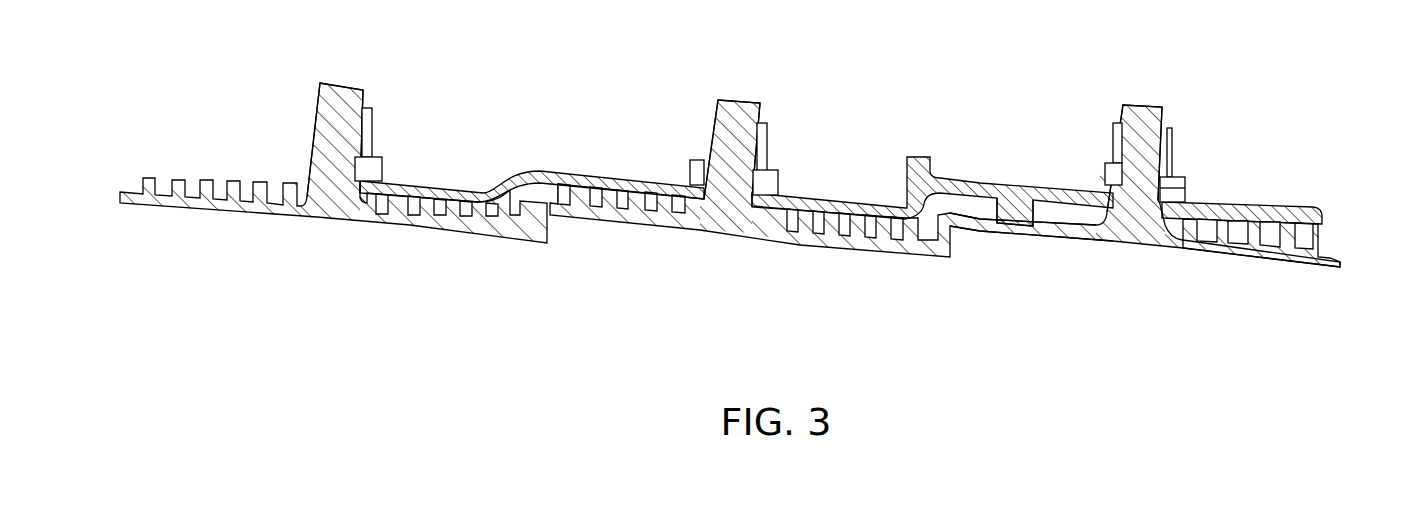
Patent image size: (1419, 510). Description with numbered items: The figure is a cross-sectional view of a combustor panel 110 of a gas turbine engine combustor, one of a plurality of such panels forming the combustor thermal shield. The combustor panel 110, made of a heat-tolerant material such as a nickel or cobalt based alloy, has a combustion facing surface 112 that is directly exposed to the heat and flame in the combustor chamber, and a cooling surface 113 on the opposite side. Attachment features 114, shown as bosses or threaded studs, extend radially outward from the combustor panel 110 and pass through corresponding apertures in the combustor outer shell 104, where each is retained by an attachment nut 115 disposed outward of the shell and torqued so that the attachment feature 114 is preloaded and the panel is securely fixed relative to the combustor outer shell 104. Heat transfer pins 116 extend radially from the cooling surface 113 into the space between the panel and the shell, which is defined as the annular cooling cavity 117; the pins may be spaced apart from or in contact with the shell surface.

The combustor outer shell 104 is at (1250, 203).
The combustor panel 110 is at (337, 205).
The combustion facing surface 112 is at (1060, 236).
The cooling surface 113 is at (1068, 200).
The attachment feature 114 is at (333, 118).
The attachment nut 115 is at (767, 175).
The heat transfer pin 116 is at (1313, 258).
The annular cooling cavity 117 is at (962, 205).